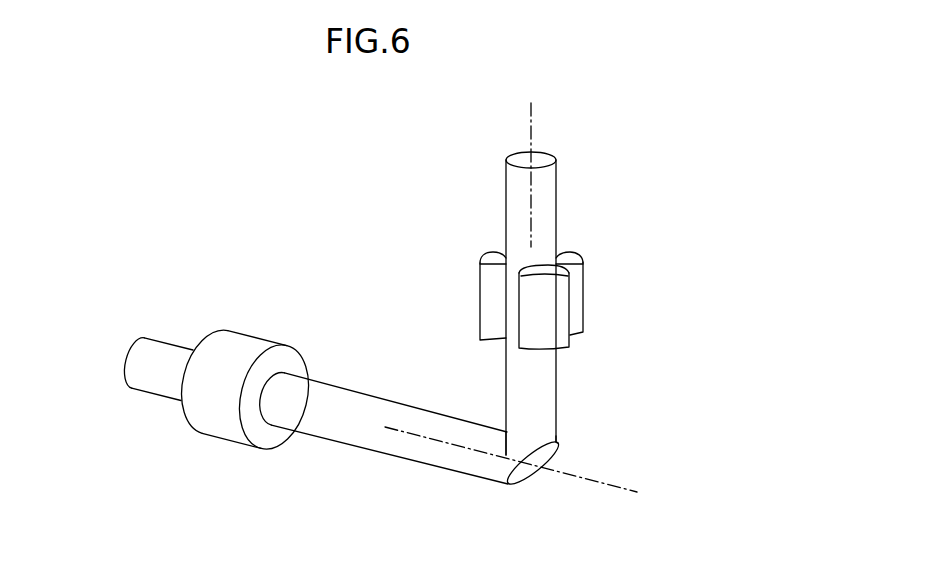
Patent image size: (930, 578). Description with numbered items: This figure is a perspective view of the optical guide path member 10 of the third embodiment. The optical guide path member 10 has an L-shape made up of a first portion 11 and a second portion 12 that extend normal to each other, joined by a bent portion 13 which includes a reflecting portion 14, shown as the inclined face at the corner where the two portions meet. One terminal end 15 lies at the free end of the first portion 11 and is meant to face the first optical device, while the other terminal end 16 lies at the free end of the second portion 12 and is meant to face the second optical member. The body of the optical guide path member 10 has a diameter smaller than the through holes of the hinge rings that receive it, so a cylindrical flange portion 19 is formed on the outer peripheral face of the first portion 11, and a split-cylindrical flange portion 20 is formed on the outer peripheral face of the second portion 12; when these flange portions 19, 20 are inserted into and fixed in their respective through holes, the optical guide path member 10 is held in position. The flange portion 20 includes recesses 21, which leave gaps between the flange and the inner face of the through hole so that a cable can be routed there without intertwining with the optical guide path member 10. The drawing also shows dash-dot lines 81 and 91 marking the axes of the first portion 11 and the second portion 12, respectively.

The optical guide path member 10 is at (383, 453).
The first portion 11 is at (375, 410).
The second portion 12 is at (515, 215).
The bent portion 13 is at (512, 460).
The reflecting portion 14 is at (525, 478).
The one terminal end 15 is at (127, 352).
The other terminal end 16 is at (533, 160).
The cylindrical flange portion 19 is at (222, 423).
The flange portion 20 is at (572, 350).
The recesses 21 is at (495, 293).
The arm axis 81 is at (613, 483).
The shaft axis 91 is at (527, 140).